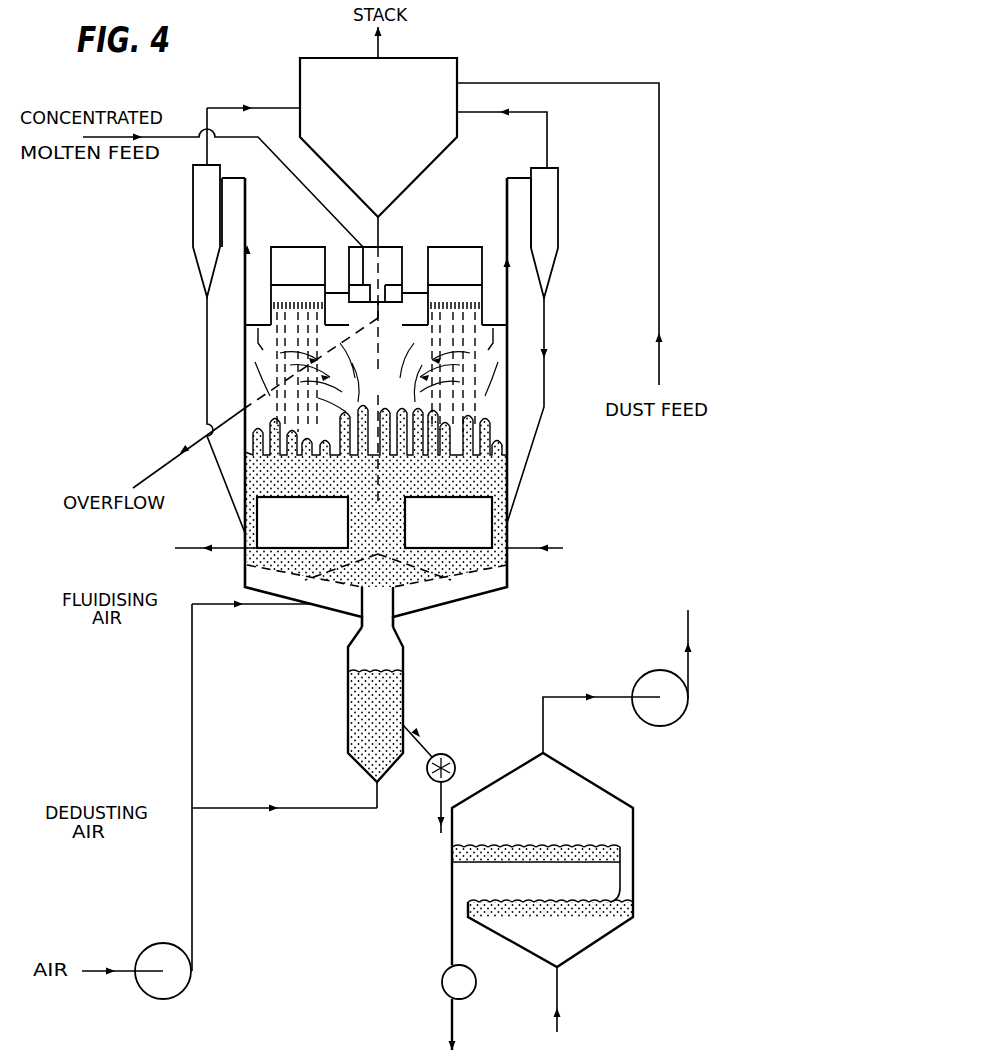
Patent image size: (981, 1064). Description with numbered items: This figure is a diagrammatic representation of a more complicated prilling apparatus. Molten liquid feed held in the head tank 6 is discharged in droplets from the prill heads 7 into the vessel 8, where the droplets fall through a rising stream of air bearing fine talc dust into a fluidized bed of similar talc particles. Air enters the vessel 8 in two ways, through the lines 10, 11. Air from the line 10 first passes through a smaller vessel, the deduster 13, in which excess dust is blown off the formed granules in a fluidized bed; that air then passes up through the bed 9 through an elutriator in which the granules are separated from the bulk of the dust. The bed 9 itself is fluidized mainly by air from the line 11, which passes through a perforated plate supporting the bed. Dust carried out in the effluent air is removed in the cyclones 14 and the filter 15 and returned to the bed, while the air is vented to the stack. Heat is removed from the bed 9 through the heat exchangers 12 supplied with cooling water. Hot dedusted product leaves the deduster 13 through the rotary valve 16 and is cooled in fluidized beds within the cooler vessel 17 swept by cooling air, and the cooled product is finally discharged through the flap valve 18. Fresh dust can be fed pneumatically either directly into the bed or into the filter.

The head tank 6 is at (395, 272).
The prill heads 7 is at (305, 268).
The vessel 8 is at (386, 391).
The bed 9 is at (303, 487).
The line 10 is at (310, 810).
The line 11 is at (274, 608).
The heat exchangers 12 is at (309, 532).
The deduster 13 is at (403, 704).
The cyclones 14 is at (202, 218).
The filter 15 is at (382, 139).
The rotary valve 16 is at (455, 766).
The vessel 17 is at (546, 816).
The flap valve 18 is at (442, 978).